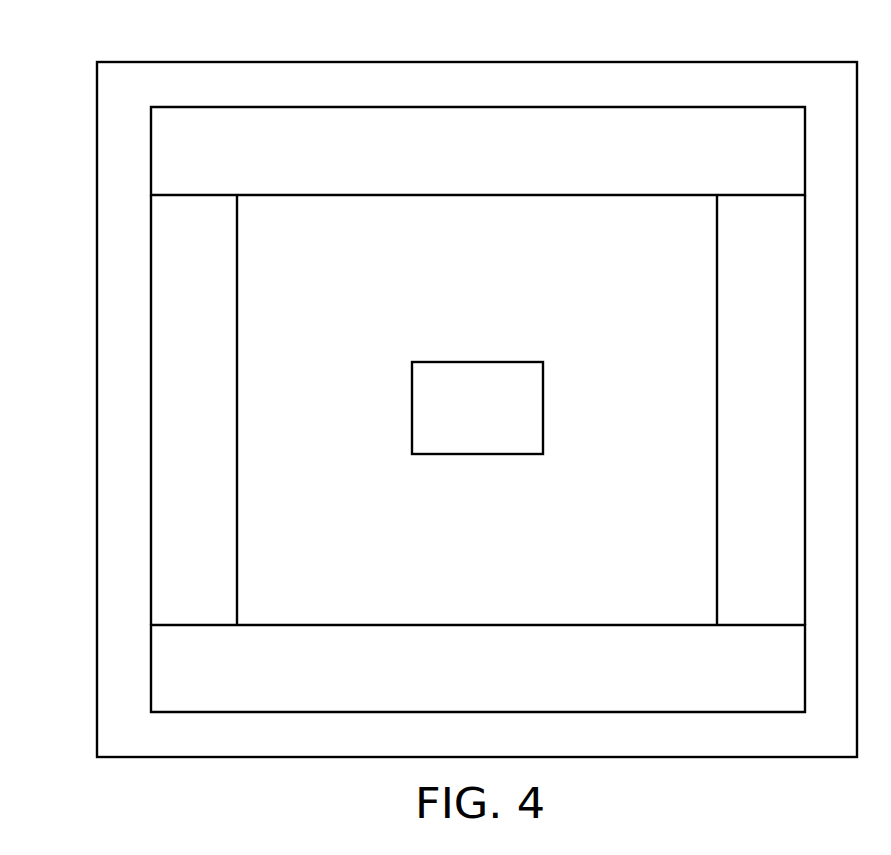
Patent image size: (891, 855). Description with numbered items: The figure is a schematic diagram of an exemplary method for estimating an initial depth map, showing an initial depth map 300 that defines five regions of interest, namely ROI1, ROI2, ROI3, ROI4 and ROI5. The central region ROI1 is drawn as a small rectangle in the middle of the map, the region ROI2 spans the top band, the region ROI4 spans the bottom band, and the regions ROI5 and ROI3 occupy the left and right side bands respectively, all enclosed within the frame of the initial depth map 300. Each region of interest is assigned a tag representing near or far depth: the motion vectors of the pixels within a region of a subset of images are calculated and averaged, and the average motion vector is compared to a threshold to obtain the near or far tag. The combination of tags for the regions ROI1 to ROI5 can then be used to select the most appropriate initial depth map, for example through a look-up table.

The initial depth map 300 is at (97, 62).
The region of interest ROI1 is at (477, 408).
The region of interest ROI2 is at (478, 151).
The region of interest ROI3 is at (761, 410).
The region of interest ROI4 is at (478, 668).
The region of interest ROI5 is at (194, 410).